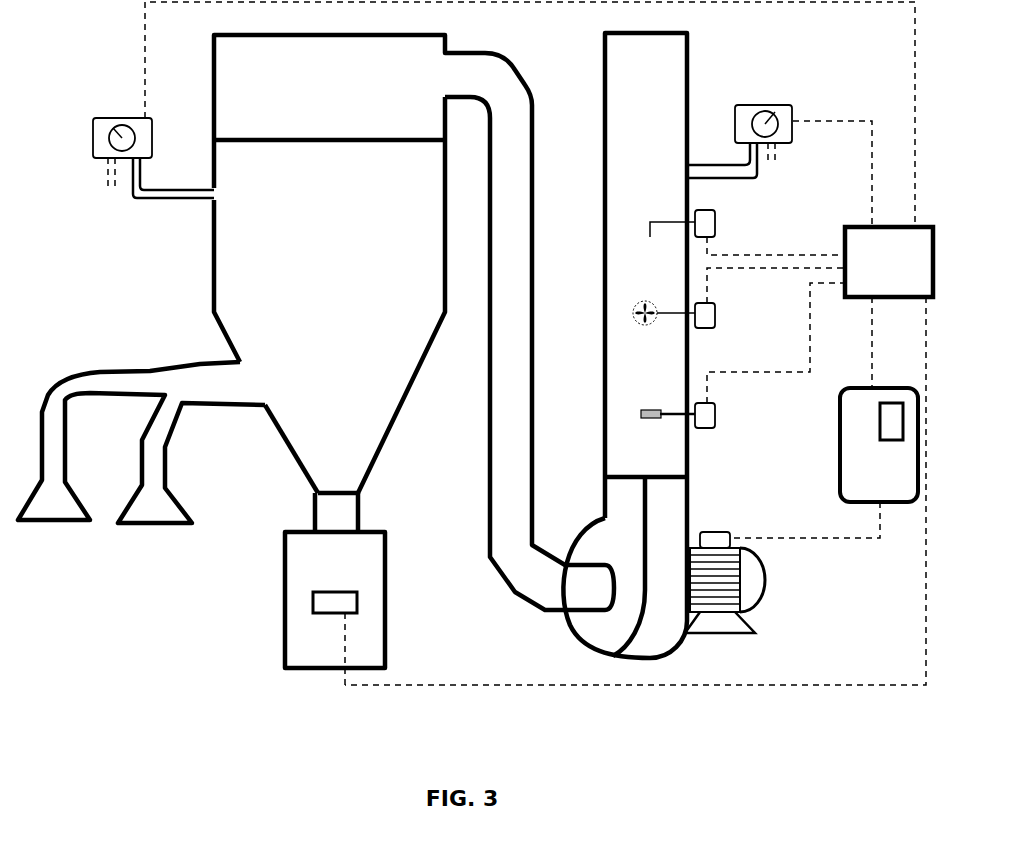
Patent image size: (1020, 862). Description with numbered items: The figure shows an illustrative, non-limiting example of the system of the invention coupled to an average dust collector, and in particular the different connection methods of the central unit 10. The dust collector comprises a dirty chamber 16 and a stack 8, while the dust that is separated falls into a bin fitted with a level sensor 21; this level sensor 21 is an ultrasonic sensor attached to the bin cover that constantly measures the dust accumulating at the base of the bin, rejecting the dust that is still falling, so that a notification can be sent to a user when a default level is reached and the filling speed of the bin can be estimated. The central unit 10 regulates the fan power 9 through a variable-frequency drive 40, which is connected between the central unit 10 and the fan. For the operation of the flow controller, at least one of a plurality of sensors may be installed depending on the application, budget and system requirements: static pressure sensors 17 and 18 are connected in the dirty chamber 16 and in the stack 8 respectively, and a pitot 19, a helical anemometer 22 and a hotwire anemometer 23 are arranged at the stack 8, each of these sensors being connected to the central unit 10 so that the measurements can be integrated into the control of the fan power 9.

The stack 8 is at (588, 43).
The fan power 9 is at (782, 585).
The central unit 10 is at (895, 312).
The dirty chamber 16 is at (255, 255).
The static pressure sensor 17 is at (118, 100).
The static pressure sensor 18 is at (765, 88).
The pitot 19 is at (730, 222).
The level sensor 21 is at (370, 603).
The helical anemometer 22 is at (730, 315).
The hotwire anemometer 23 is at (730, 415).
The variable-frequency drive 40 is at (826, 465).